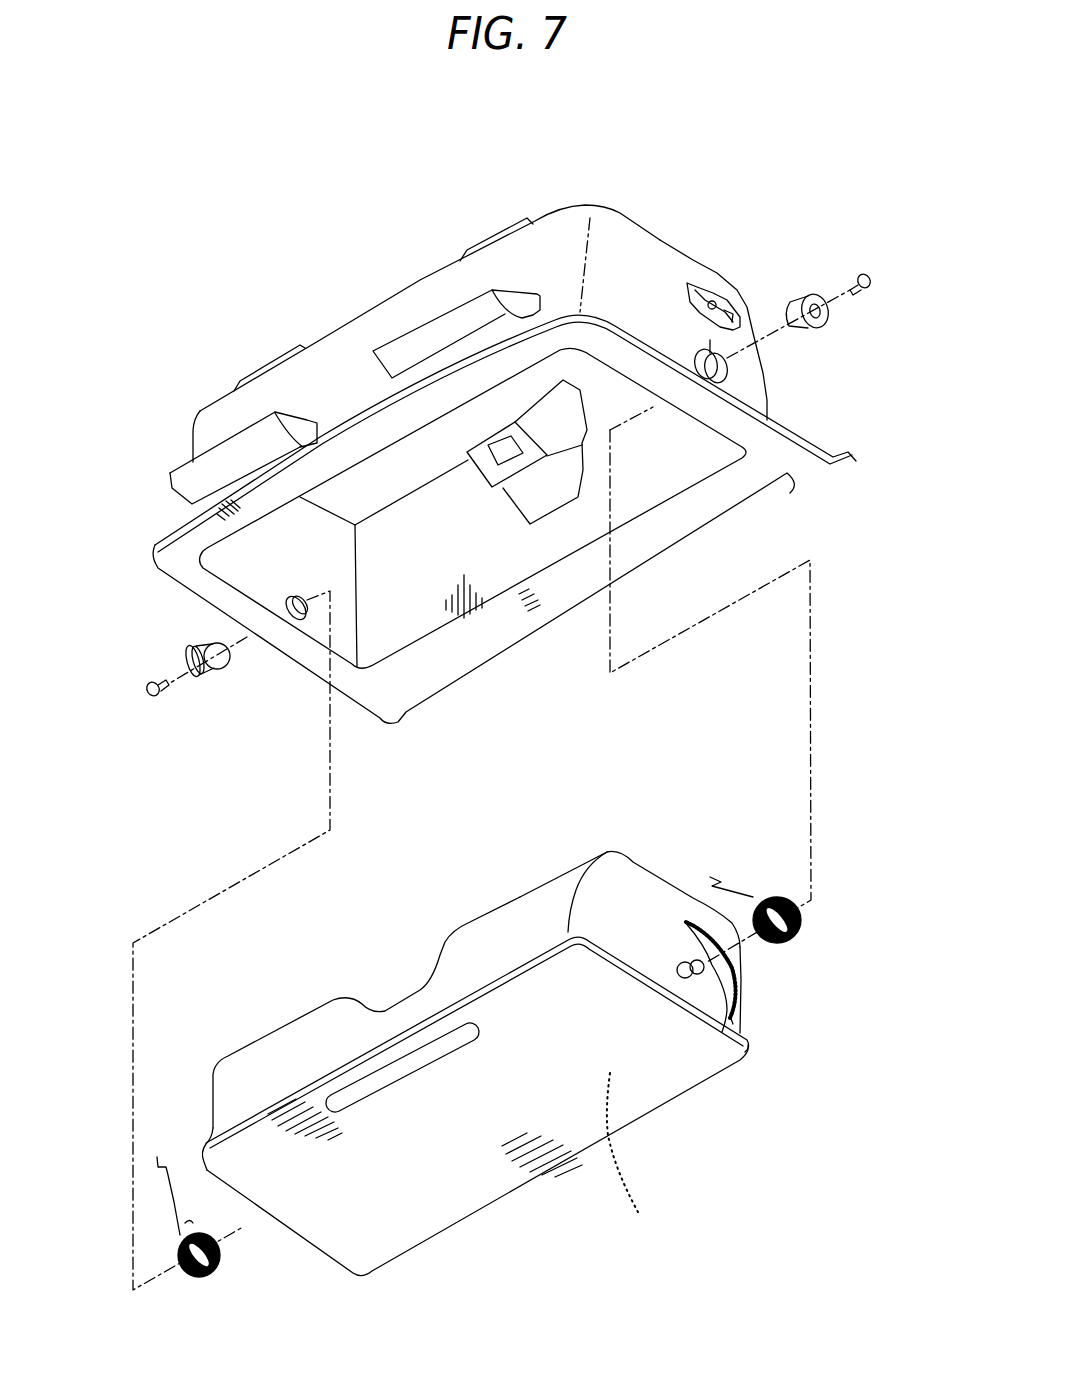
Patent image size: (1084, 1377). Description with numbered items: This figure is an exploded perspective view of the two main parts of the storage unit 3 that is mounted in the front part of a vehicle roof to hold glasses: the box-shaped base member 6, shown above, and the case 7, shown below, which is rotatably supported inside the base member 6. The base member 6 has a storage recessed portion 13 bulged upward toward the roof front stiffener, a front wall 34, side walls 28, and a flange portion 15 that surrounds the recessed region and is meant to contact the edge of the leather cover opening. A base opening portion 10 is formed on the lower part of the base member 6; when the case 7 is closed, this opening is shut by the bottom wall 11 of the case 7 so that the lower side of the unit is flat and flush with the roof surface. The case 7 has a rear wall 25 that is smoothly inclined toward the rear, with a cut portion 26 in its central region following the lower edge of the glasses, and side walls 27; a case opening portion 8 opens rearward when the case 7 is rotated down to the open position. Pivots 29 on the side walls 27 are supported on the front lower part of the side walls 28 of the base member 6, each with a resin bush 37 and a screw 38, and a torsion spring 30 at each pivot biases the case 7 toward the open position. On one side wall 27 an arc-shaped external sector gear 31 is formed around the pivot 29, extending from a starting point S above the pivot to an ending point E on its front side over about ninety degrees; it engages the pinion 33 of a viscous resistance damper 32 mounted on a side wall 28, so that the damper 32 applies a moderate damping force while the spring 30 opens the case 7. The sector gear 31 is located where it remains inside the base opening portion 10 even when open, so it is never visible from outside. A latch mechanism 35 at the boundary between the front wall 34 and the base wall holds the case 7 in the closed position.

The storage unit 3 is at (785, 389).
The base member 6 is at (680, 253).
The case 7 is at (740, 1058).
The case opening portion 8 is at (623, 1159).
The base opening portion 10 is at (362, 470).
The bottom wall 11 is at (469, 1210).
The storage recessed portion 13 is at (532, 253).
The flange portion 15 is at (167, 563).
The rear wall 25 is at (524, 899).
The cut portion 26 is at (260, 1040).
The side walls 27 is at (637, 873).
The side walls 28 is at (620, 250).
The pivots 29 is at (727, 940).
The torsion spring 30 is at (807, 928).
The sector gear 31 is at (742, 958).
The viscous resistance damper 32 is at (693, 287).
The pinion 33 is at (713, 297).
The front wall 34 is at (668, 492).
The latch mechanism 35 is at (482, 440).
The resin bush 37 is at (830, 322).
The screw 38 is at (870, 281).
The starting point S is at (697, 910).
The ending point E is at (738, 1014).